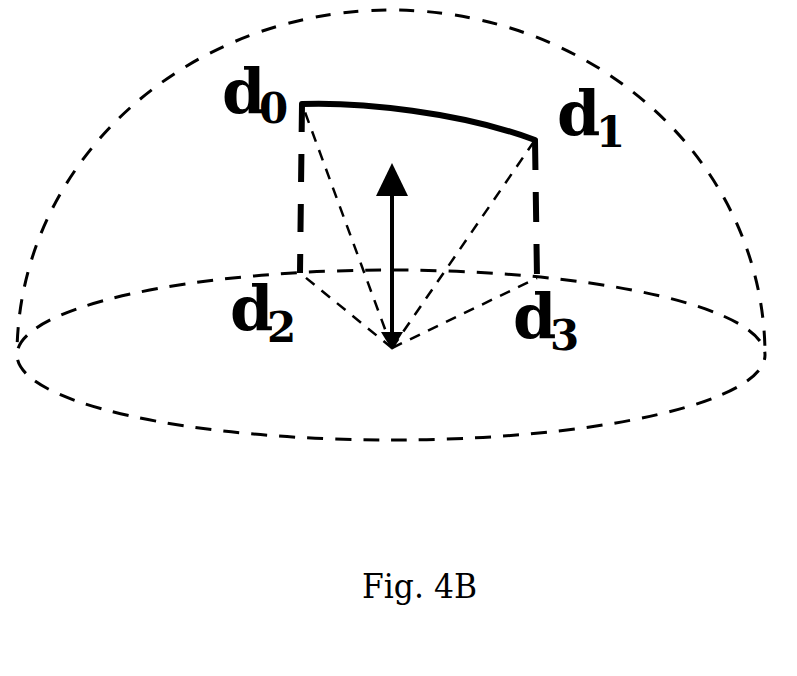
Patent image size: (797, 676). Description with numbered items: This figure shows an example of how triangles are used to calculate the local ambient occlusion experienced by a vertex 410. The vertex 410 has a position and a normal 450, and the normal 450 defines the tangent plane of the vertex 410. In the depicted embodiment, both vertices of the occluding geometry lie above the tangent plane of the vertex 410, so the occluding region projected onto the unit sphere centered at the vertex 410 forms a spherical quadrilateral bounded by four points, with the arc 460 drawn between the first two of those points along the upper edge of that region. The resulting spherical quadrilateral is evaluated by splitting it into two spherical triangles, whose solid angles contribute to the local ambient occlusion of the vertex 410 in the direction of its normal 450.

The vertex 410 is at (418, 241).
The normal 450 is at (411, 252).
The arc segment between d0 and d1 460 is at (418, 110).